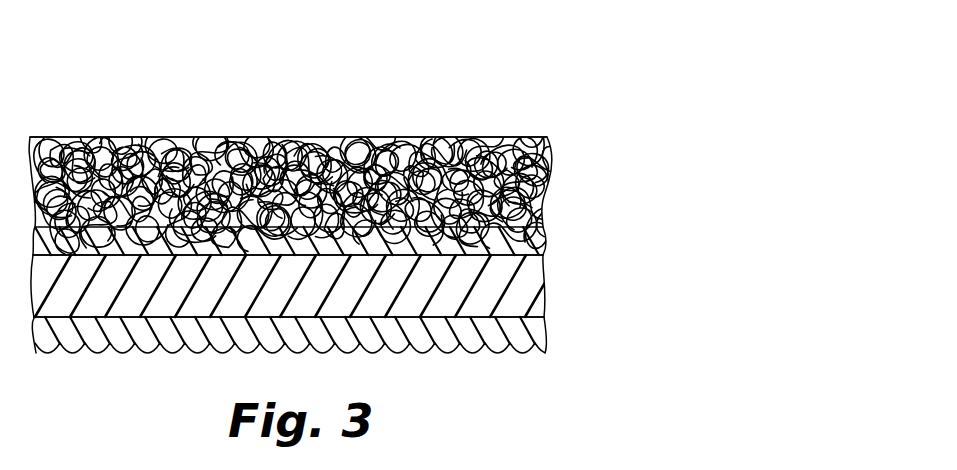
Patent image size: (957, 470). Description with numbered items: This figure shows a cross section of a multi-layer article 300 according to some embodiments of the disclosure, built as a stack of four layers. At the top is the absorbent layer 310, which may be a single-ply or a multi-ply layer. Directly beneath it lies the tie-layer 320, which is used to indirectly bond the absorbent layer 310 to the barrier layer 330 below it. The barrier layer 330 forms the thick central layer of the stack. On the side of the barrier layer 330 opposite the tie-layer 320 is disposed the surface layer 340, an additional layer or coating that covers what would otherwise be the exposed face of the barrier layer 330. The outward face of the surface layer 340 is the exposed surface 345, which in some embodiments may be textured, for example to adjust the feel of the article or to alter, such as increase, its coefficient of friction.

The multi-layer article 300 is at (560, 104).
The absorbent layer 310 is at (552, 163).
The tie-layer 320 is at (530, 240).
The barrier layer 330 is at (530, 293).
The surface layer 340 is at (530, 333).
The exposed surface 345 is at (118, 354).